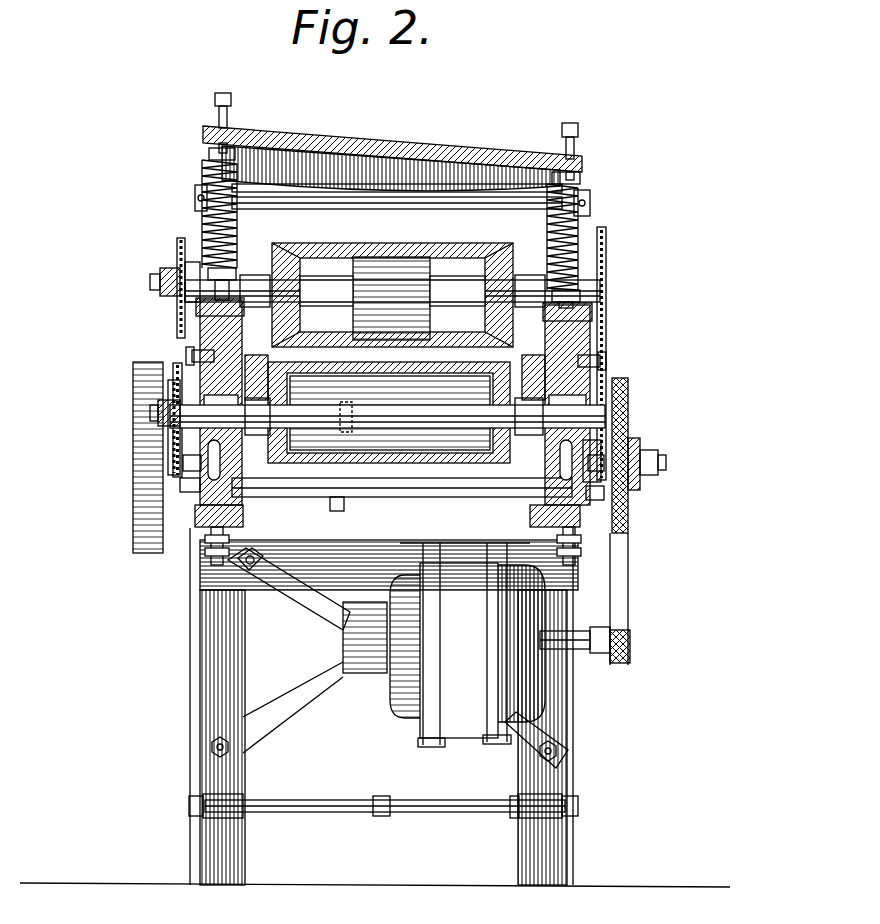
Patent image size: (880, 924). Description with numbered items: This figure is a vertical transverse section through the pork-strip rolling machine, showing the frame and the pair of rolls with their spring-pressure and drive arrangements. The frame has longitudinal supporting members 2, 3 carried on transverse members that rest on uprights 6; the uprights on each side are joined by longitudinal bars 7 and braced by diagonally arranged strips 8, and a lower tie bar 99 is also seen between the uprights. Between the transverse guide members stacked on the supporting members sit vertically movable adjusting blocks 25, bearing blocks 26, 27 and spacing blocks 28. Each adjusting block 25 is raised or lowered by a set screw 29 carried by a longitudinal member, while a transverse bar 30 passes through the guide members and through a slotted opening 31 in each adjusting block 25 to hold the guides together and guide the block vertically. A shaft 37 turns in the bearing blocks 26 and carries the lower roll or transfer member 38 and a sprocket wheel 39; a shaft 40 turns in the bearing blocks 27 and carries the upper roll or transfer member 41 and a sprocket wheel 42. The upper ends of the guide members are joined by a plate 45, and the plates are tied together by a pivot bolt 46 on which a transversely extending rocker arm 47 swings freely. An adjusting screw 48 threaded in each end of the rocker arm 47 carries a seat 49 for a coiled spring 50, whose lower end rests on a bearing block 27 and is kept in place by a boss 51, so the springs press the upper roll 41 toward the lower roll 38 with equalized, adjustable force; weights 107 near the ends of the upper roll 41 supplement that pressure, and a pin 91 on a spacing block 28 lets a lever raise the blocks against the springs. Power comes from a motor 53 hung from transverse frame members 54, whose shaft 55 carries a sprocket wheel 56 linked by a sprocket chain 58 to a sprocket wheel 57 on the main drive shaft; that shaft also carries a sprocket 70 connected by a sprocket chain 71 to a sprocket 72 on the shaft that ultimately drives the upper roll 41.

The longitudinal supporting member 2 is at (197, 533).
The longitudinal supporting member 3 is at (590, 535).
The uprights 6 is at (215, 650).
The longitudinal bars 7 is at (202, 797).
The diagonally arranged strips 8 is at (328, 626).
The adjusting blocks 25 is at (195, 506).
The bearing blocks 26 is at (165, 393).
The bearing blocks 27 is at (198, 307).
The spacing blocks 28 is at (215, 338).
The set screw 29 is at (206, 562).
The transverse bar 30 is at (170, 482).
The opening 31 is at (190, 488).
The shaft 37 is at (425, 420).
The roll or transfer member 38 is at (320, 443).
The sprocket wheel 39 is at (158, 418).
The shaft 40 is at (446, 292).
The roll or transfer member 41 is at (372, 252).
The sprocket wheel 42 is at (162, 272).
The plate 45 is at (488, 153).
The pivot bolt 46 is at (405, 150).
The rocker arm 47 is at (326, 132).
The adjusting screw 48 is at (218, 110).
The seat 49 is at (210, 153).
The coiled spring 50 is at (207, 213).
The boss 51 is at (200, 262).
The motor 53 is at (444, 645).
The transverse frame members 54 is at (362, 532).
The shaft 55 is at (580, 656).
The sprocket wheel 56 is at (632, 640).
The sprocket wheel 57 is at (660, 458).
The sprocket chain 58 is at (630, 573).
The sprocket 70 is at (640, 446).
The sprocket chain 71 is at (594, 337).
The sprocket 72 is at (608, 252).
The pin 91 is at (190, 358).
The tie rod 99 is at (385, 793).
The weights 107 is at (318, 256).